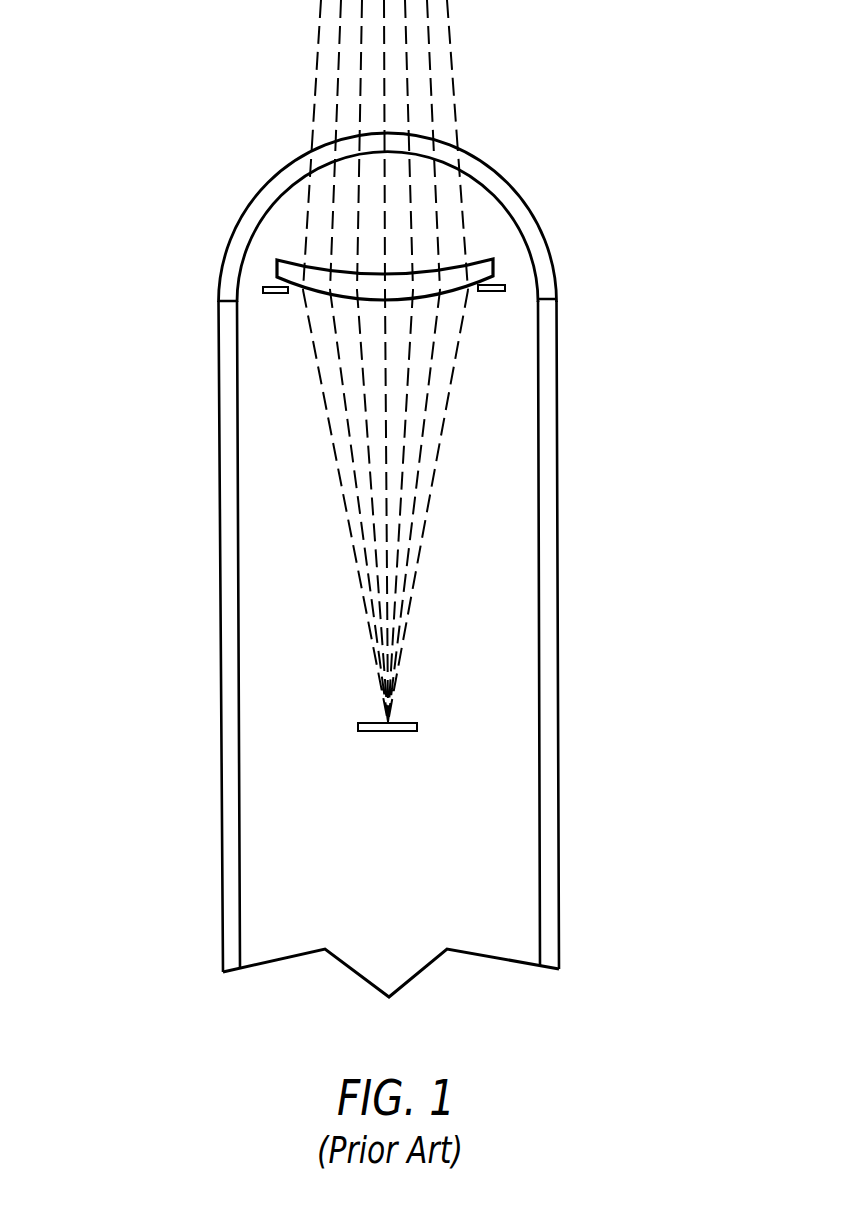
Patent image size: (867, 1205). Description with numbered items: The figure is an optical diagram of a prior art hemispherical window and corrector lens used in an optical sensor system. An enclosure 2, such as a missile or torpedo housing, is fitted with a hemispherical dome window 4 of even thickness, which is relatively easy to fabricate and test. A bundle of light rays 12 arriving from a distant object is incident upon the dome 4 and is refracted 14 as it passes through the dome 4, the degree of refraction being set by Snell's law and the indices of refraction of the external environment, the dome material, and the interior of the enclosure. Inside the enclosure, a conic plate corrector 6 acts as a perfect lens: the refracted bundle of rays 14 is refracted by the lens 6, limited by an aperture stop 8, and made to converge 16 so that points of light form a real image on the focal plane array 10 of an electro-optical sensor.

The enclosure 2 is at (222, 795).
The hemispherical dome window 4 is at (483, 160).
The conic plate corrector 6 is at (483, 258).
The aperture stop 8 is at (277, 294).
The focal plane array 10 is at (405, 721).
The bundle of light rays 12 is at (310, 43).
The refracted bundle of rays 14 is at (297, 210).
The converging rays 16 is at (319, 513).